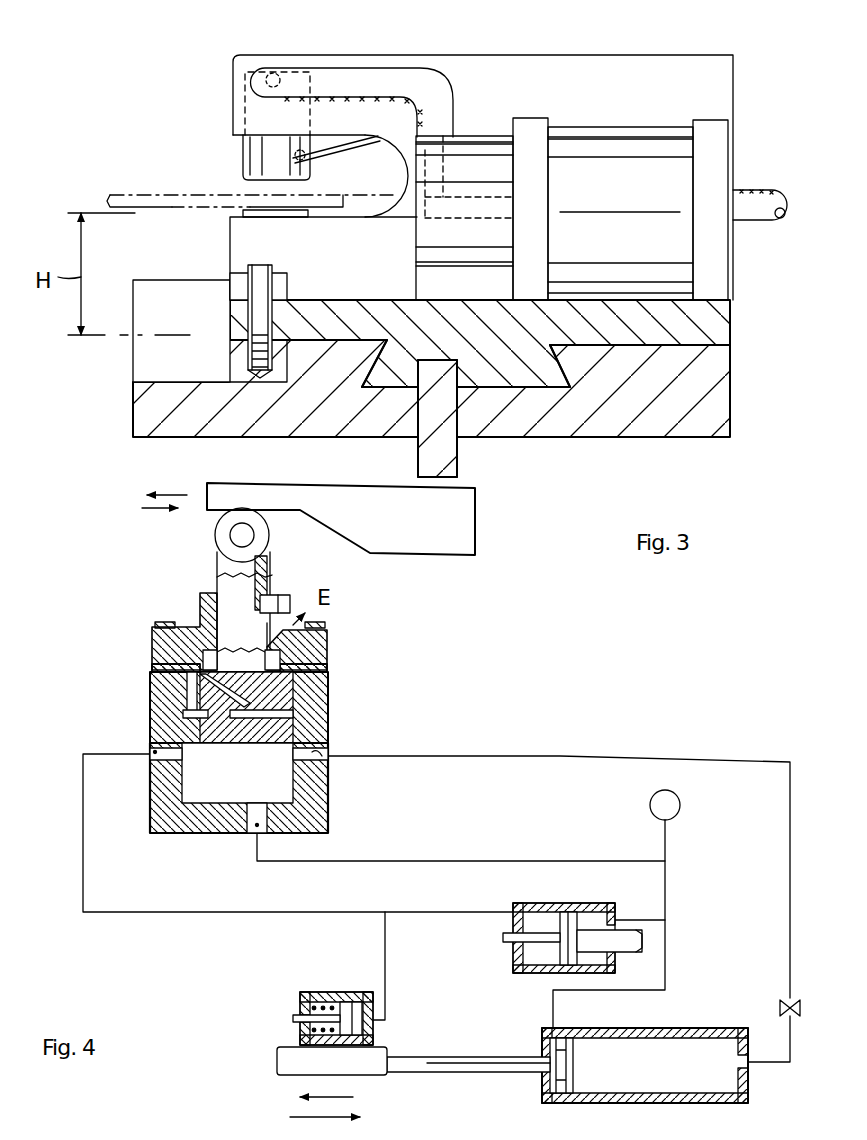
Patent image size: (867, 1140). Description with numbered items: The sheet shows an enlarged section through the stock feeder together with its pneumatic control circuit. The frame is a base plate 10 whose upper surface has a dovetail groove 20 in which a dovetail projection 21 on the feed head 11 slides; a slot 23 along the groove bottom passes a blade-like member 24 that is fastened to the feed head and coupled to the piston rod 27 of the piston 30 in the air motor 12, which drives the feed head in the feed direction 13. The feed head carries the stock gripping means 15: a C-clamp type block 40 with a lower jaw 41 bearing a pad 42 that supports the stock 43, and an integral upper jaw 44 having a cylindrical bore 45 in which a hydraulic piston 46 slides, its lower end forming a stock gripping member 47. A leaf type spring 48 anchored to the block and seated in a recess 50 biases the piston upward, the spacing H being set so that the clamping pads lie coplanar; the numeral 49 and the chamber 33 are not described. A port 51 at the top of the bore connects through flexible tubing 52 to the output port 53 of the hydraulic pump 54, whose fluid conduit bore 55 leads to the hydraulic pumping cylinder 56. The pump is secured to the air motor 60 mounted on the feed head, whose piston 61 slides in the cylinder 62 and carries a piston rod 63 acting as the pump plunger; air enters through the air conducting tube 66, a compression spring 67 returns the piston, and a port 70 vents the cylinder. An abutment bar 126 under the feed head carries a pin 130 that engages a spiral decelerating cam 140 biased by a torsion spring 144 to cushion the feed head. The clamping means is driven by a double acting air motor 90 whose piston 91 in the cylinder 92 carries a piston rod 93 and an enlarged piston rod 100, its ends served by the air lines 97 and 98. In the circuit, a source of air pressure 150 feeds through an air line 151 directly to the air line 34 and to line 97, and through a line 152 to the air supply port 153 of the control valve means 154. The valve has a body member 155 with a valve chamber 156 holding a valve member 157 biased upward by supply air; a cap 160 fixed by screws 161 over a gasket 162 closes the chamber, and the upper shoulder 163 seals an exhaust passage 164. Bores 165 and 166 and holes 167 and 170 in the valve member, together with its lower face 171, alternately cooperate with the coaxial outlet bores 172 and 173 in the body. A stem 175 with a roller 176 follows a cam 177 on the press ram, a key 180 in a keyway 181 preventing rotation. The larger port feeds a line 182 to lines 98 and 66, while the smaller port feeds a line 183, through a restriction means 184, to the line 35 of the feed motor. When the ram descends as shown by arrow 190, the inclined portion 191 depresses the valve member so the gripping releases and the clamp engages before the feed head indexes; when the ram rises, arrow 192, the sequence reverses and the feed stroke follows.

In FIG. 3, the base plate 10 is at (725, 410).
In FIG. 3, the feed head 11 is at (730, 333).
In FIG. 4, the feed head 11 is at (278, 1062).
In FIG. 4, the air motor 12 is at (675, 1028).
In FIG. 4, the feed direction 13 is at (360, 1097).
In FIG. 3, the stock gripping means 15 is at (160, 153).
In FIG. 3, the dovetail groove 20 is at (568, 375).
In FIG. 3, the dovetail projection 21 is at (527, 380).
In FIG. 3, the slot 23 is at (418, 425).
In FIG. 3, the blade-like member 24 is at (456, 457).
In FIG. 4, the piston rod 27 is at (478, 1074).
In FIG. 4, the piston 30 is at (575, 1060).
In FIG. 4, the cylinder chamber 33 is at (716, 1081).
In FIG. 4, the air line 34 is at (553, 996).
In FIG. 4, the line 35 is at (785, 1065).
In FIG. 3, the C-clamp type block 40 is at (535, 57).
In FIG. 3, the lower jaw 41 is at (326, 252).
In FIG. 3, the pad 42 is at (245, 213).
In FIG. 3, the stock 43 is at (148, 210).
In FIG. 3, the upper jaw 44 is at (232, 63).
In FIG. 3, the cylindrical bore 45 is at (245, 80).
In FIG. 3, the hydraulic piston 46 is at (243, 152).
In FIG. 3, the stock gripping member 47 is at (243, 178).
In FIG. 3, the leaf type spring 48 is at (350, 150).
In FIG. 3, the hook arm 49 is at (386, 176).
In FIG. 3, the recess 50 is at (306, 162).
In FIG. 3, the port 51 is at (283, 75).
In FIG. 3, the flexible tubing 52 is at (368, 70).
In FIG. 3, the output port 53 is at (445, 140).
In FIG. 3, the hydraulic pump 54 is at (490, 130).
In FIG. 3, the fluid conduit bore 55 is at (445, 160).
In FIG. 3, the hydraulic pumping cylinder 56 is at (455, 220).
In FIG. 3, the air motor 60 is at (652, 128).
In FIG. 4, the air motor 60 is at (378, 1034).
In FIG. 4, the piston 61 is at (340, 1002).
In FIG. 4, the cylinder 62 is at (358, 1002).
In FIG. 4, the piston rod 63 is at (293, 1020).
In FIG. 3, the air conducting tube 66 is at (757, 195).
In FIG. 4, the air conducting tube 66 is at (387, 972).
In FIG. 4, the compression spring 67 is at (305, 1010).
In FIG. 4, the port 70 is at (310, 992).
In FIG. 4, the air motor 90 is at (520, 978).
In FIG. 4, the piston 91 is at (570, 918).
In FIG. 4, the cylinder 92 is at (540, 918).
In FIG. 4, the piston rod 93 is at (508, 945).
In FIG. 4, the air line 97 is at (640, 920).
In FIG. 4, the air line 98 is at (462, 905).
In FIG. 4, the piston rod 100 is at (635, 955).
In FIG. 3, the abutment bar 126 is at (232, 356).
In FIG. 3, the pin 130 is at (262, 263).
In FIG. 3, the decelerating cam 140 is at (287, 284).
In FIG. 3, the torsion spring 144 is at (236, 273).
In FIG. 4, the source of air pressure 150 is at (681, 806).
In FIG. 4, the air line 151 is at (665, 860).
In FIG. 4, the line 152 is at (352, 861).
In FIG. 4, the air supply port 153 is at (250, 818).
In FIG. 4, the control valve means 154 is at (117, 661).
In FIG. 4, the body member 155 is at (328, 792).
In FIG. 4, the valve chamber 156 is at (230, 799).
In FIG. 4, the valve member 157 is at (290, 690).
In FIG. 4, the cap 160 is at (323, 648).
In FIG. 4, the screws 161 is at (167, 620).
In FIG. 4, the gasket 162 is at (155, 666).
In FIG. 4, the upper shoulder 163 is at (312, 680).
In FIG. 4, the exhaust passage 164 is at (300, 628).
In FIG. 4, the bore 165 is at (300, 714).
In FIG. 4, the bore 166 is at (182, 718).
In FIG. 4, the hole 167 is at (160, 685).
In FIG. 4, the hole 170 is at (185, 704).
In FIG. 4, the lower face 171 is at (255, 745).
In FIG. 4, the outlet bore 172 is at (152, 756).
In FIG. 4, the outlet bore 173 is at (322, 758).
In FIG. 4, the stem 175 is at (228, 590).
In FIG. 4, the roller 176 is at (272, 535).
In FIG. 4, the cam 177 is at (424, 541).
In FIG. 4, the key 180 is at (280, 605).
In FIG. 4, the keyway 181 is at (276, 582).
In FIG. 4, the line 182 is at (83, 845).
In FIG. 4, the line 183 is at (550, 763).
In FIG. 4, the restriction means 184 is at (785, 998).
In FIG. 4, the arrow 190 is at (178, 495).
In FIG. 4, the inclined portion 191 is at (330, 535).
In FIG. 4, the arrow 192 is at (160, 510).